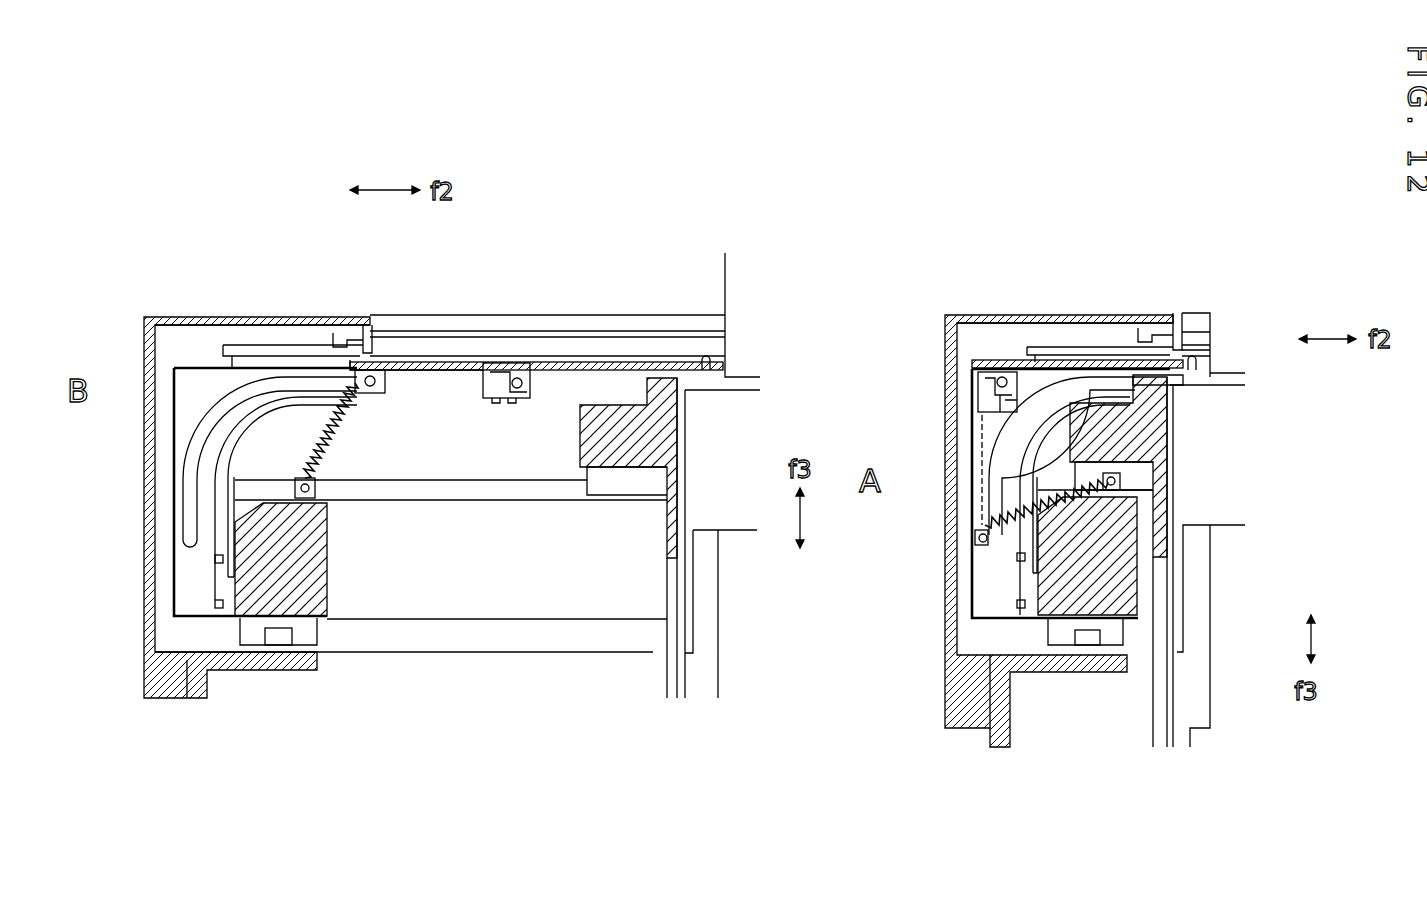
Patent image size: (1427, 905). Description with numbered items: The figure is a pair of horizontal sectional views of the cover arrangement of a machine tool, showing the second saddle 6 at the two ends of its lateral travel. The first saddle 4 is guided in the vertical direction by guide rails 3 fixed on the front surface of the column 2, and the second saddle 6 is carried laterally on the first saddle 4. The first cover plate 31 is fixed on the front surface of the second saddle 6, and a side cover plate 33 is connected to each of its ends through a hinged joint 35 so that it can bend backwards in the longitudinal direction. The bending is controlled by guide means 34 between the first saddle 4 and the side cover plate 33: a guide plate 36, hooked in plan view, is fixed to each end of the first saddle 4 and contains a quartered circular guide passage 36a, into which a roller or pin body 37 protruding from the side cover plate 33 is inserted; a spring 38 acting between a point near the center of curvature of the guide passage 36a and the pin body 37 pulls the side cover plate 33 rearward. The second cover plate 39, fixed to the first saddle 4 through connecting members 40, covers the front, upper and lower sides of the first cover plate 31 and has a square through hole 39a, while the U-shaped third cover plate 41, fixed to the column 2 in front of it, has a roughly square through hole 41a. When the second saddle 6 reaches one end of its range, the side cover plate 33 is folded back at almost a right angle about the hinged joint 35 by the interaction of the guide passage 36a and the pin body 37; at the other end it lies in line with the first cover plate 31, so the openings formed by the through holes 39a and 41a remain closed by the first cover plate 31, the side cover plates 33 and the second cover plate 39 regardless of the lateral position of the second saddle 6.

In FIG. 12B, the column 2 is at (195, 690).
In FIG. 12A, the column 2 is at (1059, 531).
In FIG. 12B, the guide rail 3 is at (285, 645).
In FIG. 12A, the guide rail 3 is at (1053, 633).
In FIG. 12B, the first saddle 4 is at (250, 585).
In FIG. 12A, the first saddle 4 is at (1150, 585).
In FIG. 12B, the second saddle 6 is at (580, 433).
In FIG. 12A, the second saddle 6 is at (1170, 450).
In FIG. 12B, the first cover plate 31 is at (588, 360).
In FIG. 12A, the first cover plate 31 is at (1000, 360).
In FIG. 12B, the side cover plate 33 is at (433, 372).
In FIG. 12A, the side cover plate 33 is at (980, 437).
In FIG. 12B, the guide means 34 is at (200, 362).
In FIG. 12A, the guide means 34 is at (968, 357).
In FIG. 12B, the hinged joint 35 is at (520, 400).
In FIG. 12A, the hinged joint 35 is at (978, 385).
In FIG. 12B, the guide plate 36 is at (183, 416).
In FIG. 12A, the guide plate 36 is at (983, 580).
In FIG. 12B, the guide passage 36a is at (187, 500).
In FIG. 12A, the guide passage 36a is at (1150, 417).
In FIG. 12A, the pin body 37 is at (975, 533).
In FIG. 12B, the spring 38 is at (320, 458).
In FIG. 12A, the spring 38 is at (1150, 506).
In FIG. 12B, the second cover plate 39 is at (350, 343).
In FIG. 12A, the second cover plate 39 is at (1150, 330).
In FIG. 12B, the square through hole 39a is at (670, 345).
In FIG. 12A, the square through hole 39a is at (1195, 335).
In FIG. 12B, the connecting member 40 is at (293, 356).
In FIG. 12A, the connecting member 40 is at (1073, 347).
In FIG. 12B, the third cover plate 41 is at (270, 315).
In FIG. 12A, the third cover plate 41 is at (1015, 315).
In FIG. 12B, the through hole 41a is at (487, 318).
In FIG. 12A, the through hole 41a is at (1190, 315).